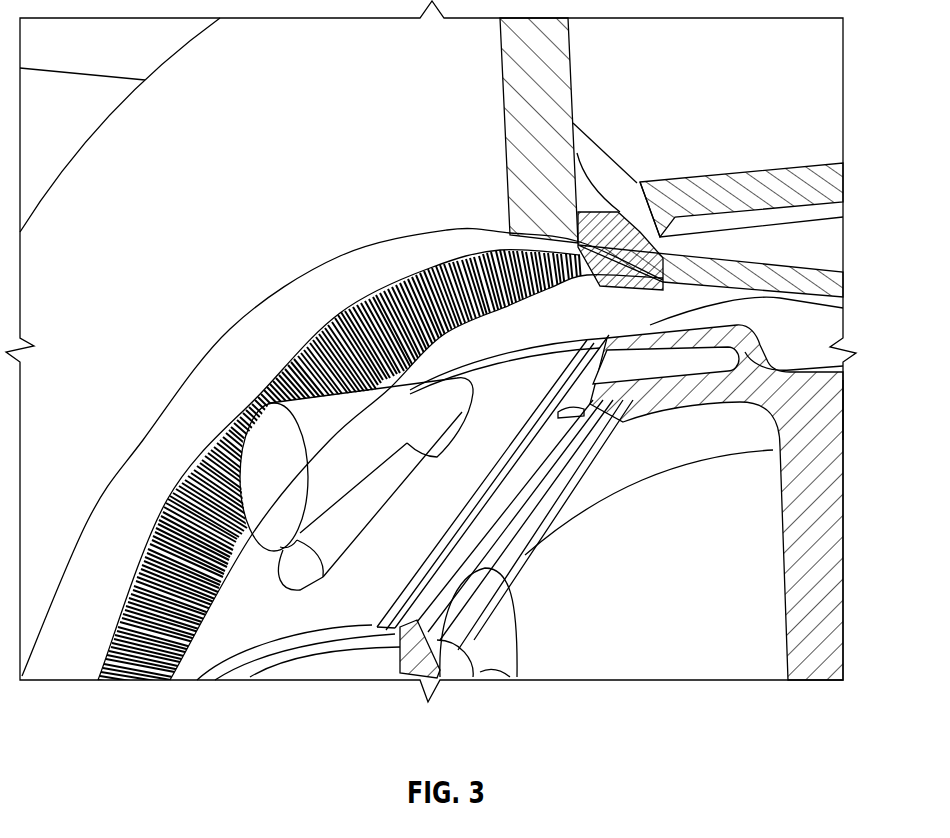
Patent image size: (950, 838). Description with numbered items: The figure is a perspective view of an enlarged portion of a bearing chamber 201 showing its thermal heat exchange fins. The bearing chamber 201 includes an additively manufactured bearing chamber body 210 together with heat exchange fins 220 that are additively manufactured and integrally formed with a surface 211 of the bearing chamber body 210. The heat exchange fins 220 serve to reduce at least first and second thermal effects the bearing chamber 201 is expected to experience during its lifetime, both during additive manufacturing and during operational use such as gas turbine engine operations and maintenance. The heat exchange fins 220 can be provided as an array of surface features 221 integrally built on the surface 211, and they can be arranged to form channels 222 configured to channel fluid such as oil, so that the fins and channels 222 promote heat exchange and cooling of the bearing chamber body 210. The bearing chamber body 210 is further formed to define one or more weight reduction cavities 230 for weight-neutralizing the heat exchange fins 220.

The bearing chamber 201 is at (831, 407).
The bearing chamber body 210 is at (820, 560).
The surface 211 is at (655, 238).
The heat exchange fins 220 is at (366, 503).
The surface features 221 is at (177, 520).
The channels 222 is at (108, 648).
The weight reduction cavities 230 is at (643, 367).